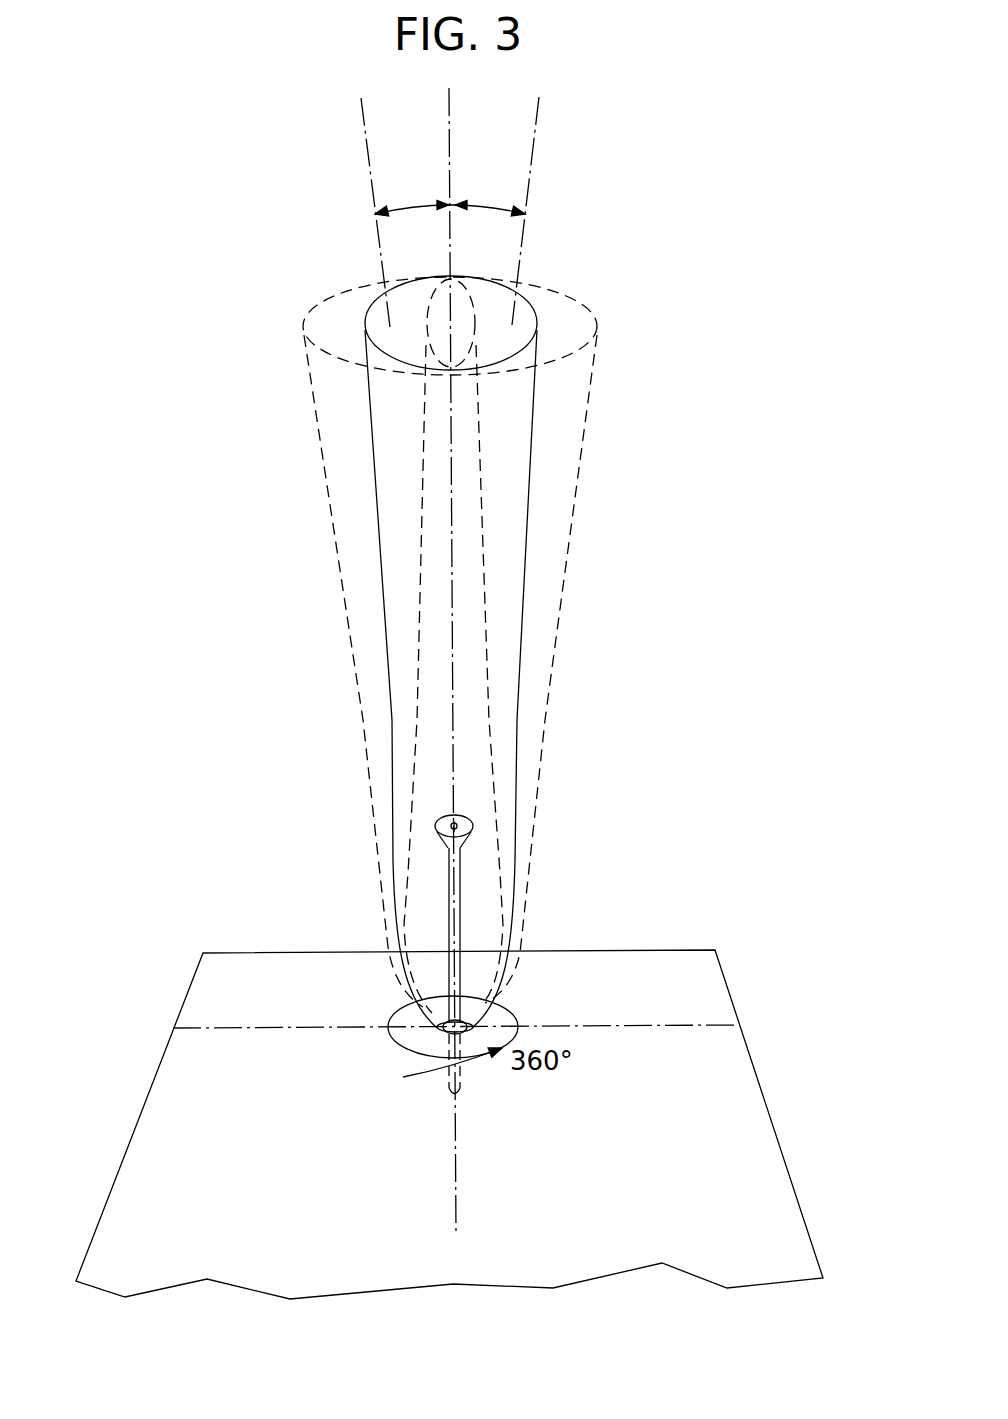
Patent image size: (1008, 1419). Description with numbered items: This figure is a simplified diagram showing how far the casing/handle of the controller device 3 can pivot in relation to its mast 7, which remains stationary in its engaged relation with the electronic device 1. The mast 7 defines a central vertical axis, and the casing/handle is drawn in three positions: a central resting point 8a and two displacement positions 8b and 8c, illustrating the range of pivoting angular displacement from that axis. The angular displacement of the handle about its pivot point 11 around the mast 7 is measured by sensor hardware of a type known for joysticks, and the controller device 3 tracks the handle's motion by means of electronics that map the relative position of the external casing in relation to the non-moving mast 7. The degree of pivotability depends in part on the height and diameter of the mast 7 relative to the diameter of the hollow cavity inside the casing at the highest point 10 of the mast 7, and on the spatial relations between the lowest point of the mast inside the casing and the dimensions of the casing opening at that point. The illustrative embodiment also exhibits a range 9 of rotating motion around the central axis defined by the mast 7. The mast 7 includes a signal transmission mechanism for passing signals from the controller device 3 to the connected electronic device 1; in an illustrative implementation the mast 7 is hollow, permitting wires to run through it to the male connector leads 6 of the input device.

The electronic device 1 is at (760, 1045).
The controller device 3 is at (563, 657).
The male connector leads 6 is at (450, 1036).
The mast 7 is at (450, 875).
The resting point 8a is at (524, 292).
The displacement position 8b is at (313, 417).
The displacement position 8c is at (590, 392).
The range of rotating motion 9 is at (520, 1013).
The highest point of the mast 10 is at (467, 817).
The pivot point 11 is at (447, 987).